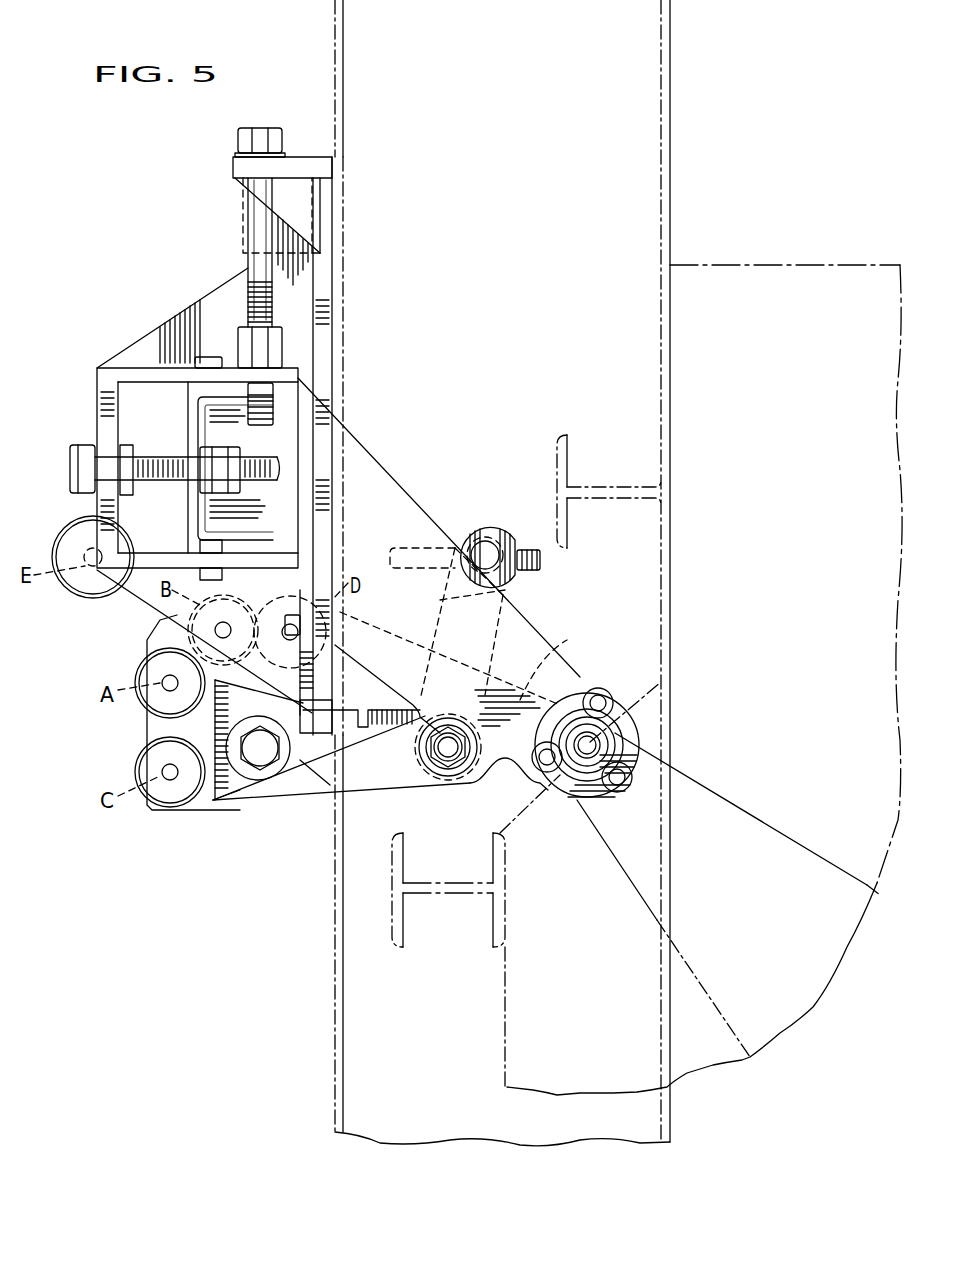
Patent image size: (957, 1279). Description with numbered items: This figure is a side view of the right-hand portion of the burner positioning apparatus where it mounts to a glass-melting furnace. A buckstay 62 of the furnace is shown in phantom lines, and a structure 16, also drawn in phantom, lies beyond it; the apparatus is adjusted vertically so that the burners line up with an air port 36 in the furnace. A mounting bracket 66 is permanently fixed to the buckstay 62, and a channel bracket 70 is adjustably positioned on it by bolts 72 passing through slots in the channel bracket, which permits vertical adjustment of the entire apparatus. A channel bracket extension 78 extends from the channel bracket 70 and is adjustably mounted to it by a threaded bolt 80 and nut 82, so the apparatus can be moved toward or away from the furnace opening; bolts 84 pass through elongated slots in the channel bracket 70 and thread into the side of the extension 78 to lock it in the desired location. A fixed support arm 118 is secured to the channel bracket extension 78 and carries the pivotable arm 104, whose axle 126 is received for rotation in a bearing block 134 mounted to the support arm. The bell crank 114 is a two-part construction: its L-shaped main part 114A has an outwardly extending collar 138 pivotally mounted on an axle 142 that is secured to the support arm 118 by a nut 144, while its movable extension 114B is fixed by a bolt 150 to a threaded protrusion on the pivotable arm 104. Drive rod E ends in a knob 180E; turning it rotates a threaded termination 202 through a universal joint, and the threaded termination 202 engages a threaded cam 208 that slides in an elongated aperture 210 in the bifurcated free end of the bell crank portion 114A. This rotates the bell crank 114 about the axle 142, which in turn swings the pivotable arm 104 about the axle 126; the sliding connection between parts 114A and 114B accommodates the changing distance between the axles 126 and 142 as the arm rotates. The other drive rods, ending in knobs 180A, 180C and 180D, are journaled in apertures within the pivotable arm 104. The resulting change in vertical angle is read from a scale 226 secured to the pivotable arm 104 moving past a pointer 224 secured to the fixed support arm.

The panel 16 is at (742, 265).
The air port 36 is at (676, 950).
The buckstay 62 is at (333, 893).
The mounting bracket 66 is at (336, 305).
The channel bracket 70 is at (122, 345).
The bolt 72 is at (298, 605).
The channel bracket extension 78 is at (190, 415).
The threaded bolt 80 is at (75, 452).
The nut 82 is at (225, 490).
The bolt 84 is at (212, 358).
The pivotable arm 104 is at (562, 660).
The bell crank 114 is at (525, 638).
The L-shaped main part of bell crank 114A is at (478, 530).
The movable extension of bell crank 114B is at (235, 762).
The fixed support arm 118 is at (388, 485).
The axle 126 is at (595, 748).
The bearing block 134 is at (608, 695).
The collar 138 is at (472, 700).
The axle 142 is at (450, 750).
The nut 144 is at (432, 747).
The bolt 150 is at (268, 757).
The knob 180A is at (150, 675).
The knob 180C is at (150, 770).
The knob 180D is at (343, 640).
The knob 180E is at (85, 528).
The threaded termination 202 is at (542, 563).
The threaded cam 208 is at (490, 532).
The elongated aperture 210 is at (445, 583).
The pointer 224 is at (305, 790).
The scale 226 is at (213, 710).